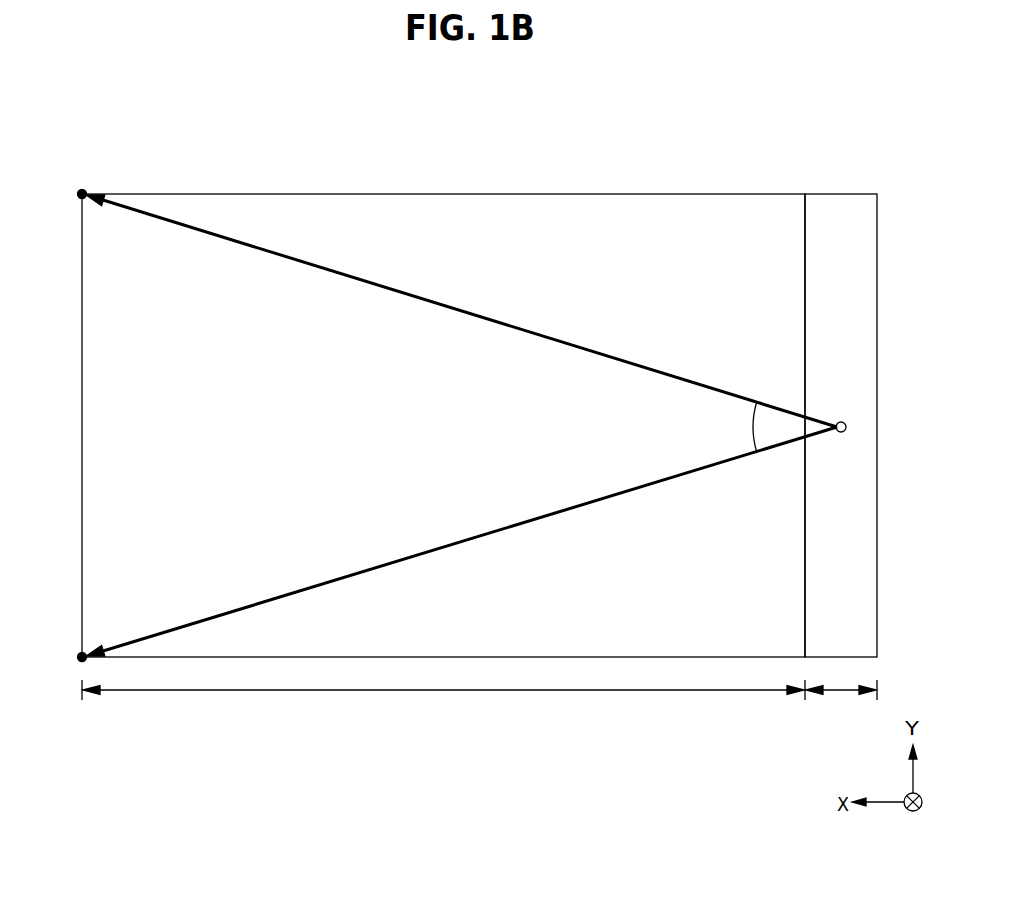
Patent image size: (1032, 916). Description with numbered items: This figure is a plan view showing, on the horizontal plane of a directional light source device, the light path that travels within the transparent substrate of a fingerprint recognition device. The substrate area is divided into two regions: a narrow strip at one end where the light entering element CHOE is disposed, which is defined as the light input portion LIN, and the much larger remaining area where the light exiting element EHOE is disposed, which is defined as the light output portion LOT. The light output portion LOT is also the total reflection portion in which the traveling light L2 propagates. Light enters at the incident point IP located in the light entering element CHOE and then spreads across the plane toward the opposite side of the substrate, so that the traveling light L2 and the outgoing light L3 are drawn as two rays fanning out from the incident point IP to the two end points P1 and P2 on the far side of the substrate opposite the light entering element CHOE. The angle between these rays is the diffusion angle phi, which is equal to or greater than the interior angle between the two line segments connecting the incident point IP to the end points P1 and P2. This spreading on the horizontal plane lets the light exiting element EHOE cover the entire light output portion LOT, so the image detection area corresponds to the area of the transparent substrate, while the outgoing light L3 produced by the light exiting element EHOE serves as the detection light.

The light exiting element EHOE is at (665, 206).
The light entering element CHOE is at (838, 206).
The traveling light L2 is at (611, 357).
The outgoing light L3 is at (612, 498).
The diffusion angle phi is at (740, 427).
The end point P1 is at (82, 192).
The end point P2 is at (80, 659).
The incident point IP is at (846, 427).
The light output portion LOT is at (443, 699).
The light input portion LIN is at (841, 699).